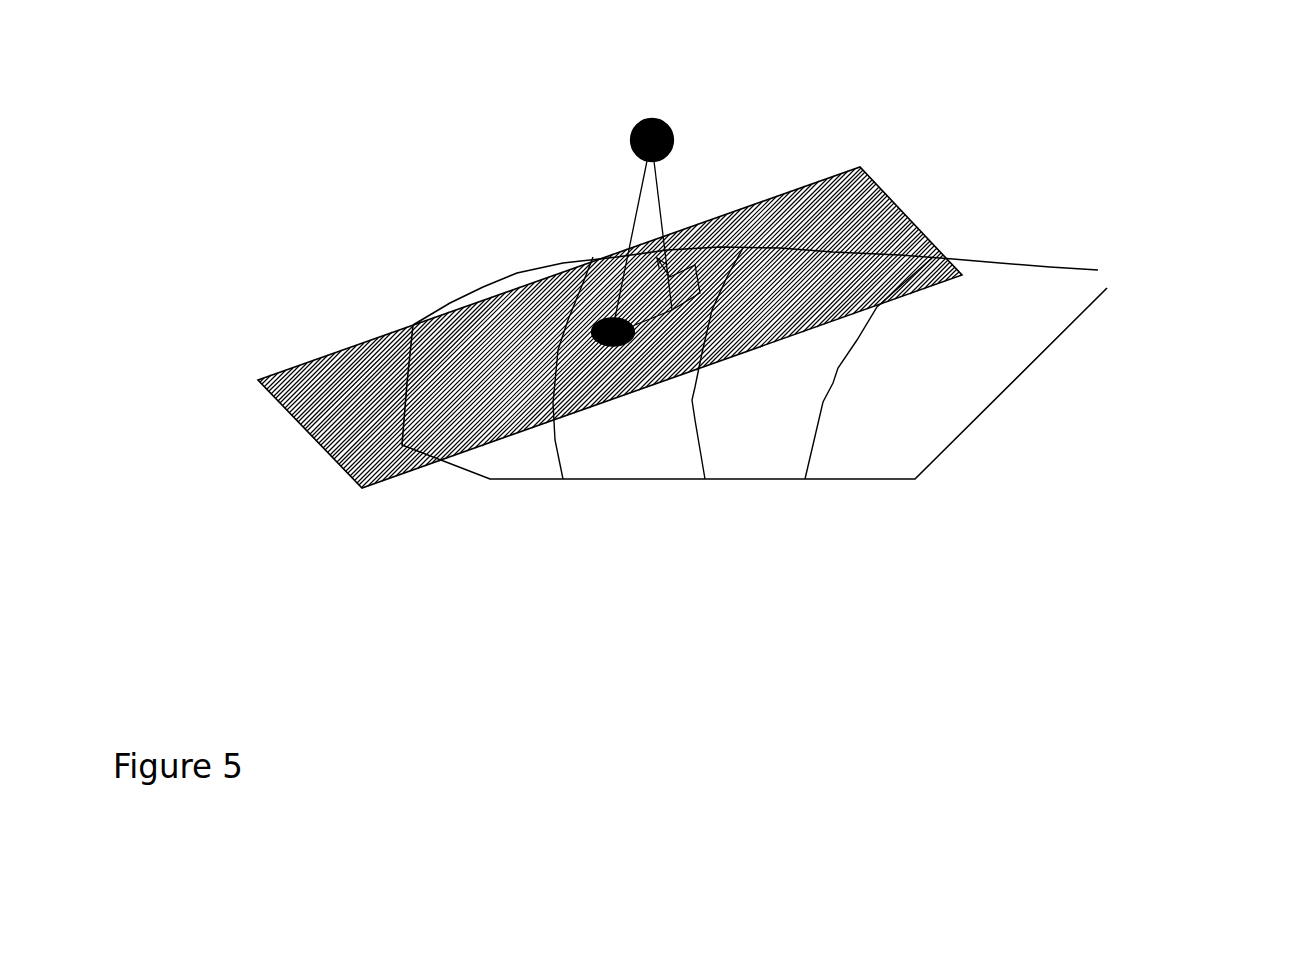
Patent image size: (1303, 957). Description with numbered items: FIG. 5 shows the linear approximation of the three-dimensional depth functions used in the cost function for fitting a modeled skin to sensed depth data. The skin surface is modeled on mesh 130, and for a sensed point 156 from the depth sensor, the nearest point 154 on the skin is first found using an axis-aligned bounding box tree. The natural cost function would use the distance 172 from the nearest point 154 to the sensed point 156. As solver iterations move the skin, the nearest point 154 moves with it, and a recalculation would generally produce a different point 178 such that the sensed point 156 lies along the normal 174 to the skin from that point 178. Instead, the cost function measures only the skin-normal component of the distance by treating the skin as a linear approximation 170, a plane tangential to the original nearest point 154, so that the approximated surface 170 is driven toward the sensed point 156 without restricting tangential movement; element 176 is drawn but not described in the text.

The mesh 130 is at (1055, 388).
The linear approximation 170 is at (913, 198).
The sensed 3D point 156 is at (697, 118).
The nearest point 154 is at (612, 352).
The 3D distance 172 is at (600, 193).
The normal 174 is at (673, 185).
The light path segment 176 is at (655, 325).
The recalculated nearest point 178 is at (680, 325).